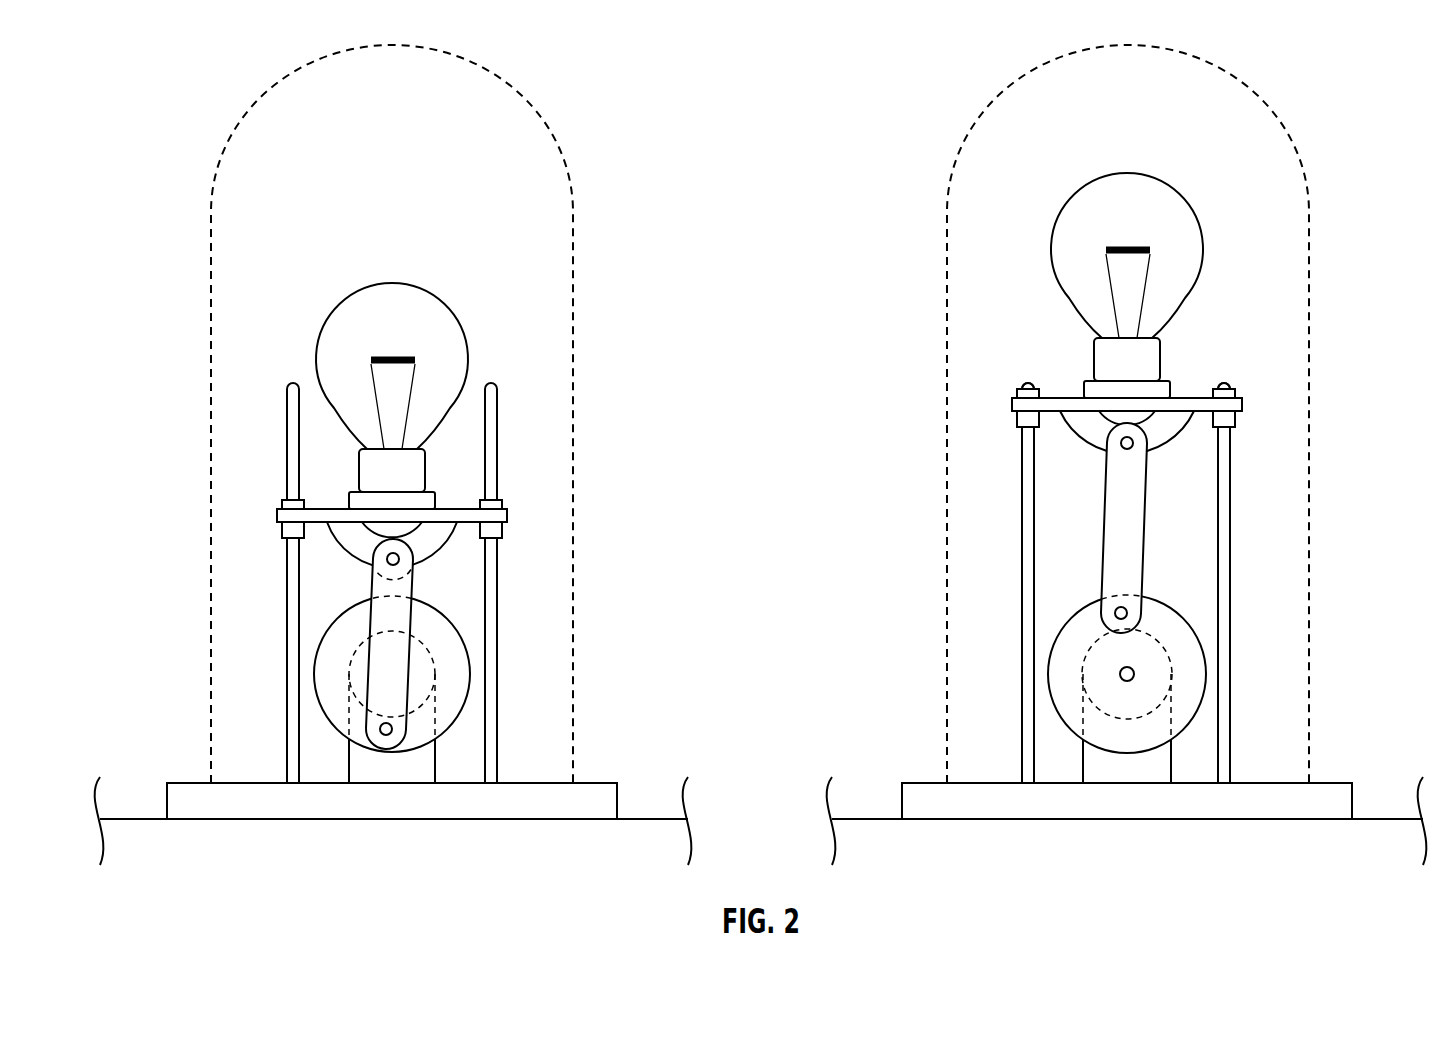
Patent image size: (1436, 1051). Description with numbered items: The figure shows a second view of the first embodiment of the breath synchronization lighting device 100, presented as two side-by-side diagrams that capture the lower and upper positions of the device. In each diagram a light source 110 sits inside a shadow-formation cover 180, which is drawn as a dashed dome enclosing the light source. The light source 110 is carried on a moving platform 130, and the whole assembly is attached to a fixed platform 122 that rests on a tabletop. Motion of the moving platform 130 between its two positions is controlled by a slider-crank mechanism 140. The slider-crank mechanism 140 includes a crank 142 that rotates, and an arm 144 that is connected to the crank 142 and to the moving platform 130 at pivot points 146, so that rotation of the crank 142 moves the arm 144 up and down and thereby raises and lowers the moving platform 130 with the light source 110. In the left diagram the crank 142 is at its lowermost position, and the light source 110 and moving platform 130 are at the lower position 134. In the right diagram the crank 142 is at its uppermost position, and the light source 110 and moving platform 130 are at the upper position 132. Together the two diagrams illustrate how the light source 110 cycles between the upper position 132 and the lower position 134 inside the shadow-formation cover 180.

The breath synchronization lighting device 100 is at (560, 83).
The light source 110 is at (416, 307).
The fixed platform 122 is at (598, 798).
The moving platform 130 is at (473, 512).
The upper position 132 is at (948, 413).
The lower position 134 is at (575, 538).
The slider-crank mechanism 140 is at (302, 626).
The crank 142 is at (452, 675).
The arm 144 is at (398, 613).
The pivot points 146 is at (375, 559).
The shadow-formation cover 180 is at (573, 211).